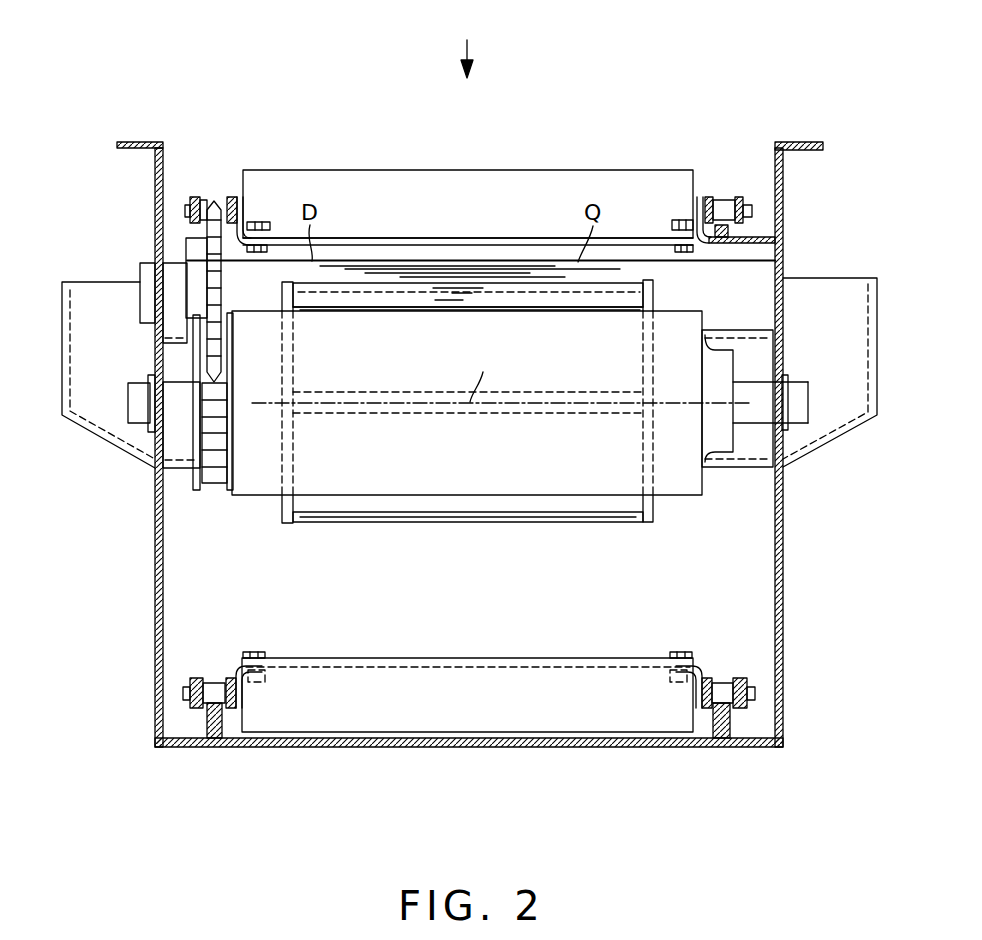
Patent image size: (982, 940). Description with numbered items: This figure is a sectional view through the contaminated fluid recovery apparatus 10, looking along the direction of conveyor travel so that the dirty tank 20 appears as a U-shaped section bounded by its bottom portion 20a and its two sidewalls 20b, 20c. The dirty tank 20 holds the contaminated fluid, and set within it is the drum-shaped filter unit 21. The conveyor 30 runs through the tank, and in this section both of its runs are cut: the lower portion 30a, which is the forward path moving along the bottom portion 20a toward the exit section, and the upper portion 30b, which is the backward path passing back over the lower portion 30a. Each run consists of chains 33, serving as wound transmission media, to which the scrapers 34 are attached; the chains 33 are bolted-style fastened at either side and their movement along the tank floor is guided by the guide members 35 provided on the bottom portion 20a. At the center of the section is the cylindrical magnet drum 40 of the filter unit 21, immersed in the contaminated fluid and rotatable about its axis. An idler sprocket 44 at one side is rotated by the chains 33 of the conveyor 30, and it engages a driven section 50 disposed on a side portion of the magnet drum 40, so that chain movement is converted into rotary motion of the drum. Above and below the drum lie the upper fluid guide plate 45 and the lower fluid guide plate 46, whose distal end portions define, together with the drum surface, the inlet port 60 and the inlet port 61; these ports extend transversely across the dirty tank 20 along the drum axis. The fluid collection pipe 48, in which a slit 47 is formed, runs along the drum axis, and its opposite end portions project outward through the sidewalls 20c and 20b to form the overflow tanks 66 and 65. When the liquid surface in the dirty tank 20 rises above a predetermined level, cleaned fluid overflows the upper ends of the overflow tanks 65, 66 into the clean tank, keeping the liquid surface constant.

The contaminated fluid recovery apparatus 10 is at (646, 66).
The dirty tank 20 is at (165, 641).
The bottom portion 20a is at (457, 746).
The sidewall 20b is at (783, 556).
The sidewall 20c is at (156, 508).
The drum-shaped filter unit 21 is at (321, 538).
The conveyor 30 is at (350, 169).
The lower portion 30a is at (452, 653).
The upper portion 30b is at (429, 229).
The chains 33 is at (213, 196).
The scrapers 34 is at (501, 187).
The guide members 35 is at (214, 732).
The magnet drum 40 is at (582, 484).
The idler sprocket 44 is at (200, 248).
The upper fluid guide plate 45 is at (650, 279).
The lower fluid guide plate 46 is at (622, 521).
The slit 47 is at (440, 413).
The fluid collection pipe 48 is at (730, 468).
The driven section 50 is at (218, 456).
The inlet port 60 is at (516, 308).
The inlet port 61 is at (512, 506).
The overflow tank 65 is at (832, 289).
The overflow tank 66 is at (97, 287).